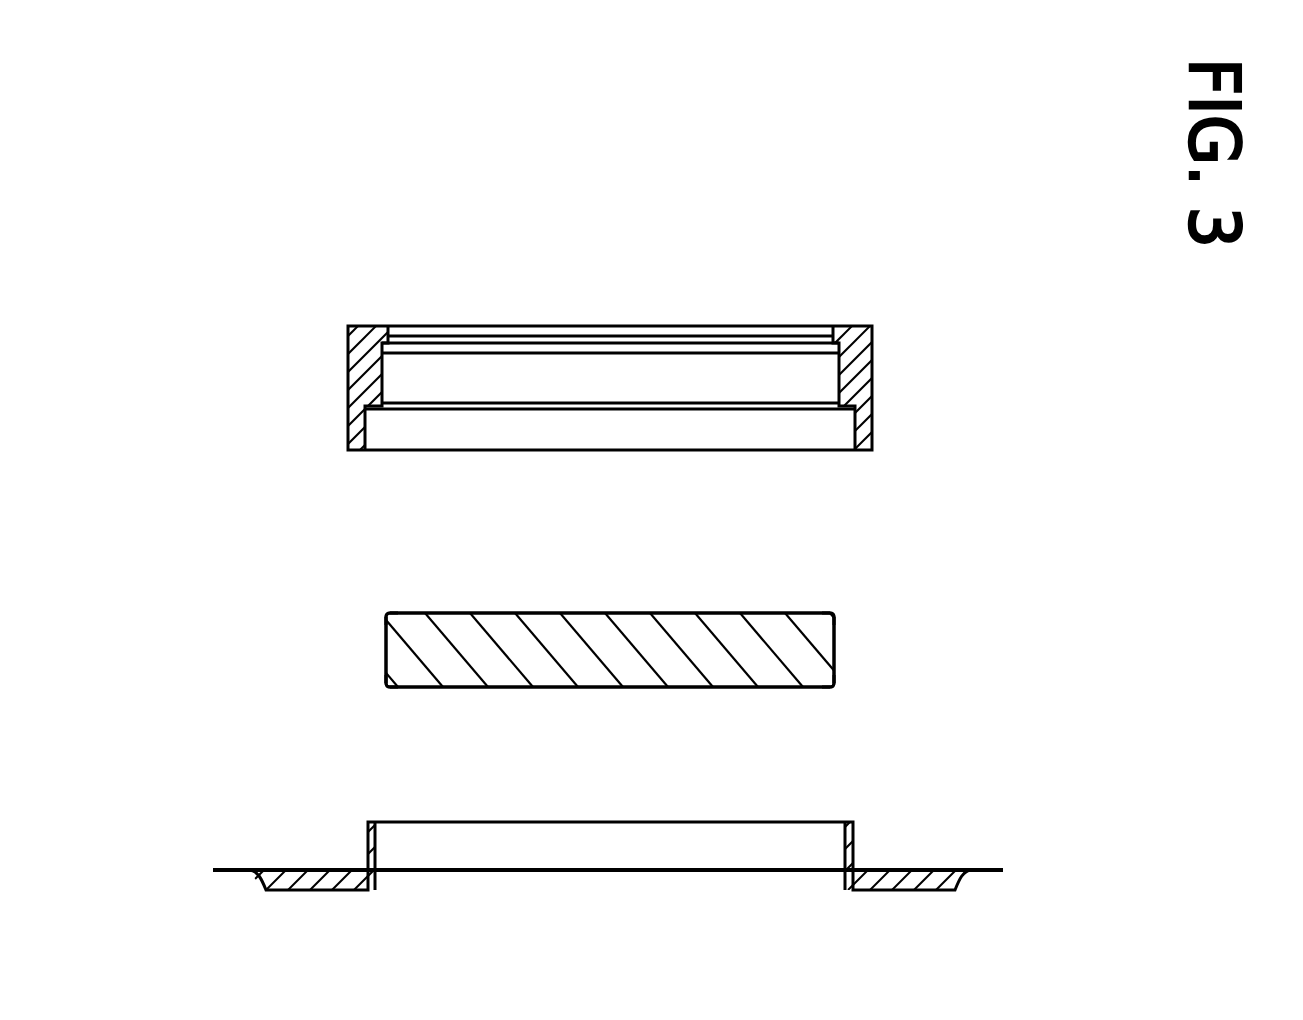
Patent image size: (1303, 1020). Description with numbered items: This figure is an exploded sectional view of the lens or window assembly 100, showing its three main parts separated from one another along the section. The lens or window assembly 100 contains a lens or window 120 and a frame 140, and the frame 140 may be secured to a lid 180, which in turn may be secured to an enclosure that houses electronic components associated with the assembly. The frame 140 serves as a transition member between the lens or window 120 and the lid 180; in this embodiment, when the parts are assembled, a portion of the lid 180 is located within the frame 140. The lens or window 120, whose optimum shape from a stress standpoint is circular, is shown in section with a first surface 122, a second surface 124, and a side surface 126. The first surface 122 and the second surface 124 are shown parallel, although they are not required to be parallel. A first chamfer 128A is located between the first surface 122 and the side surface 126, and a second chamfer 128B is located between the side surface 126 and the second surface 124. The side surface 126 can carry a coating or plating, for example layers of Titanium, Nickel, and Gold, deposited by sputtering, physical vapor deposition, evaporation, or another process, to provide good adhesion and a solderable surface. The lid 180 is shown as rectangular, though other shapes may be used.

The lens or window assembly 100 is at (1008, 308).
The lens or window 120 is at (386, 660).
The first surface 122 is at (630, 688).
The second surface 124 is at (618, 612).
The side surface 126 is at (386, 628).
The first chamfer 128A is at (387, 688).
The second chamfer 128B is at (387, 612).
The frame 140 is at (348, 416).
The lid 180 is at (313, 868).